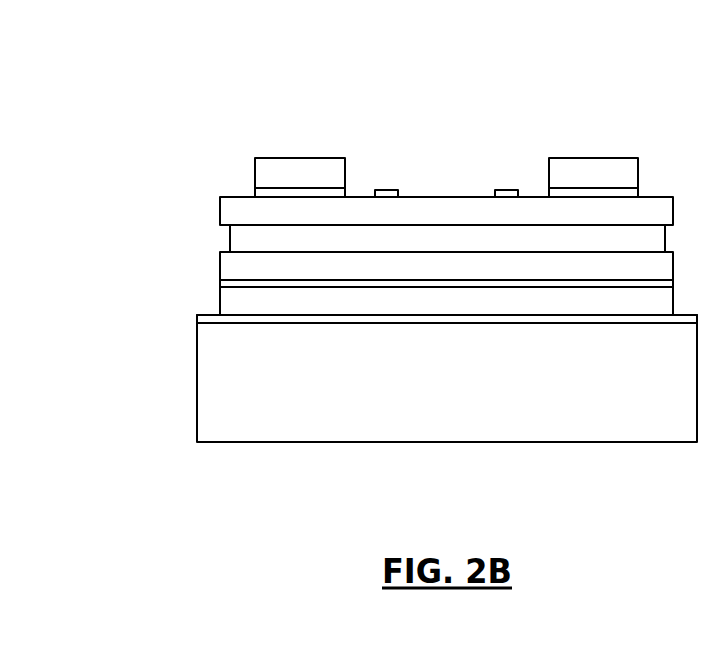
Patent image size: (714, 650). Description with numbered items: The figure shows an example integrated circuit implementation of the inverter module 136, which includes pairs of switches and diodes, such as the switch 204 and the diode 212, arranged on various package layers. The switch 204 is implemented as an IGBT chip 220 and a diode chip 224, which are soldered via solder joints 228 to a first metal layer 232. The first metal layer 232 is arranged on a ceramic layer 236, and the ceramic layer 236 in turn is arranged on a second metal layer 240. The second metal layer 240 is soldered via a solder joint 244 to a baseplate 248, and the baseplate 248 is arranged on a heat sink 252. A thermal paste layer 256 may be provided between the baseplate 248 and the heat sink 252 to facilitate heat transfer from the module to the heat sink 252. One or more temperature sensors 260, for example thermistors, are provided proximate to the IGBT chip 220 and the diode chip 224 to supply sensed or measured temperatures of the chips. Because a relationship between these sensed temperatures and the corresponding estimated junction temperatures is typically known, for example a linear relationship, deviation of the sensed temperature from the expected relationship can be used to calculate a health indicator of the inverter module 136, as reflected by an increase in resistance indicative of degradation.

The inverter module 136 is at (158, 90).
The switch 204 is at (286, 116).
The diode 212 is at (573, 117).
The IGBT chip 220 is at (345, 173).
The diode chip 224 is at (638, 173).
The solder joints 228 is at (255, 192).
The temperature sensors 260 is at (495, 190).
The first metal layer 232 is at (220, 212).
The ceramic layer 236 is at (230, 240).
The second metal layer 240 is at (220, 268).
The solder joint 244 is at (220, 283).
The baseplate 248 is at (220, 298).
The thermal paste layer 256 is at (197, 322).
The heat sink 252 is at (197, 385).